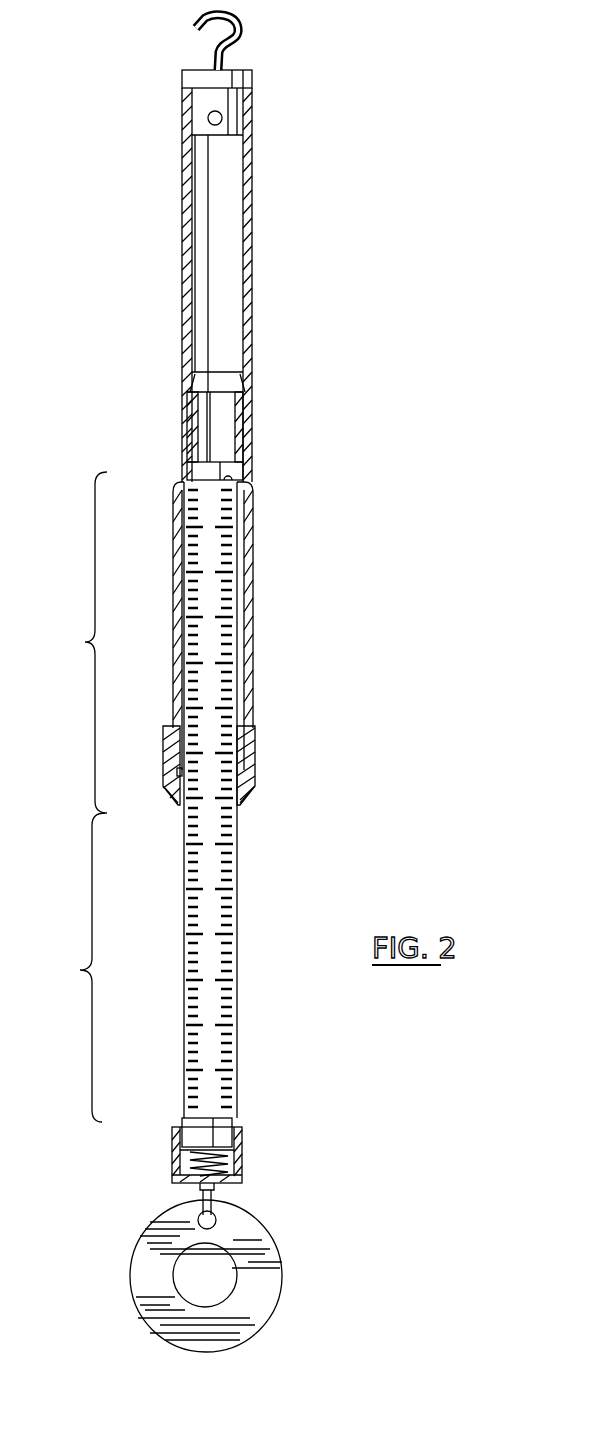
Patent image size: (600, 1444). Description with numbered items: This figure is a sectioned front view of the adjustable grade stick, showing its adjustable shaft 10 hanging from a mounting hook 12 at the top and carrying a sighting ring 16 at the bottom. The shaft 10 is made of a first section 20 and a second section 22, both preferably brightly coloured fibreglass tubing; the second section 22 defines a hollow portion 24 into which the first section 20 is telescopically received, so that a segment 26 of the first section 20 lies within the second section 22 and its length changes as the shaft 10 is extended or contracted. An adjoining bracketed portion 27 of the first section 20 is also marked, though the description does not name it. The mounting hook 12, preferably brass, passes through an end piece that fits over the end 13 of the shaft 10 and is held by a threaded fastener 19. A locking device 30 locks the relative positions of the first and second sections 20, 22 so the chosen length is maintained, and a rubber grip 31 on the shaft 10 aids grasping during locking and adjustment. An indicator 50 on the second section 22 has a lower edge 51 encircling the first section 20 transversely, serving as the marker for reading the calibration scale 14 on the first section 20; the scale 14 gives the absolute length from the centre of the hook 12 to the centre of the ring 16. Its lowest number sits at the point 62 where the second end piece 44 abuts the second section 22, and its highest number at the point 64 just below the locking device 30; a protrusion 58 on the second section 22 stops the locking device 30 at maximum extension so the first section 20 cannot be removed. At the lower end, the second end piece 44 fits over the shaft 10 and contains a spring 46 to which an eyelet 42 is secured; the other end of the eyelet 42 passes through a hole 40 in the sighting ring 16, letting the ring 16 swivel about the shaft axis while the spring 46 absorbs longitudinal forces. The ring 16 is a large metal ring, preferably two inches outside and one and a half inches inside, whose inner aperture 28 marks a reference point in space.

The adjustable shaft 10 is at (470, 577).
The mounting hook 12 is at (233, 50).
The end 13 is at (125, 82).
The calibration scale 14 is at (228, 950).
The sighting ring 16 is at (266, 1318).
The threaded fastener 19 is at (217, 117).
The first section 20 is at (238, 900).
The second section 22 is at (285, 269).
The hollow portion 24 is at (213, 295).
The segment 26 is at (77, 642).
The lower section 27 is at (74, 967).
The inner aperture 28 is at (221, 1288).
The locking device 30 is at (217, 428).
The rubber grip 31 is at (253, 597).
The hole 40 is at (216, 1222).
The eyelet 42 is at (213, 1195).
The second end piece 44 is at (242, 1140).
The spring 46 is at (232, 1164).
The indicator 50 is at (257, 762).
The lower edge 51 is at (245, 803).
The protrusion 58 is at (178, 773).
The point 62 is at (205, 1118).
The point 64 is at (240, 478).